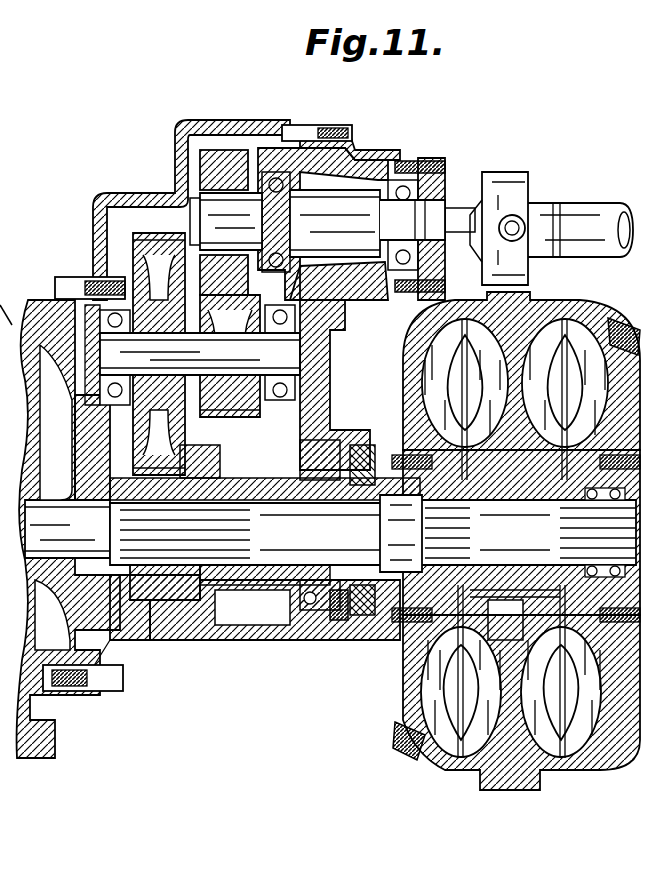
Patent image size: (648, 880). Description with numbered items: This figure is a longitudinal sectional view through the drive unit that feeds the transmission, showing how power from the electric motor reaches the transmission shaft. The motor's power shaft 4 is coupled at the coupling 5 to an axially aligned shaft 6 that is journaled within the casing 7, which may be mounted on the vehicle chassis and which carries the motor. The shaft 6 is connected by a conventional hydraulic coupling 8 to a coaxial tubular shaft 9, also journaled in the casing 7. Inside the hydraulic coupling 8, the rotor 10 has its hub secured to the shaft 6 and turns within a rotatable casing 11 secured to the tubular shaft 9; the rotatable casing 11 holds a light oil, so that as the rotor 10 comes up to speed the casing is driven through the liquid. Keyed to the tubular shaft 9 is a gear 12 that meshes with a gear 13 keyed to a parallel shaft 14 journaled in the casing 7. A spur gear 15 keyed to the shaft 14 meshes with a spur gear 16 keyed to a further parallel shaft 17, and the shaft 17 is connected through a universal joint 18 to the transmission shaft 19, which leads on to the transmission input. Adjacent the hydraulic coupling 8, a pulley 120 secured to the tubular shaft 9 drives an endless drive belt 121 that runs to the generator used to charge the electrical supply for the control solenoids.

The power shaft 4 is at (44, 500).
The coupling 5 is at (168, 590).
The shaft 6 is at (292, 540).
The casing 7 is at (166, 200).
The hydraulic coupling 8 is at (381, 713).
The tubular shaft 9 is at (280, 492).
The rotor 10 is at (553, 335).
The rotatable casing 11 is at (12, 331).
The gear 12 is at (148, 598).
The gear 13 is at (150, 236).
The shaft 14 is at (145, 344).
The spur gear 15 is at (242, 412).
The spur gear 16 is at (228, 160).
The shaft 17 is at (348, 208).
The universal joint 18 is at (508, 182).
The transmission shaft 19 is at (578, 215).
The pulley 120 is at (348, 612).
The drive belt 121 is at (362, 448).